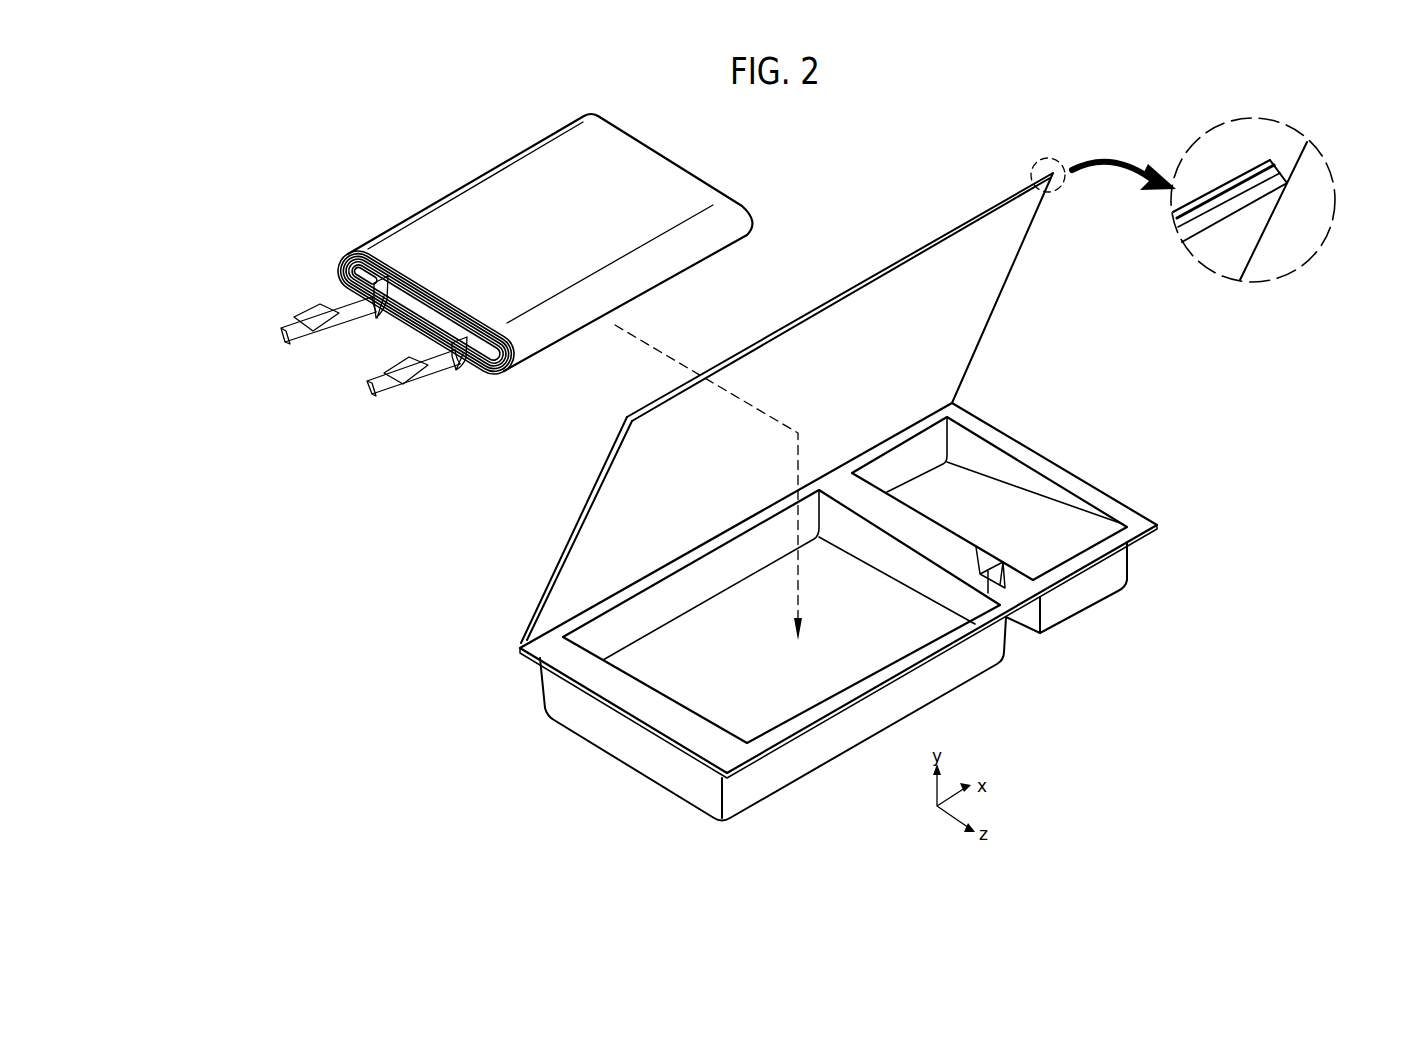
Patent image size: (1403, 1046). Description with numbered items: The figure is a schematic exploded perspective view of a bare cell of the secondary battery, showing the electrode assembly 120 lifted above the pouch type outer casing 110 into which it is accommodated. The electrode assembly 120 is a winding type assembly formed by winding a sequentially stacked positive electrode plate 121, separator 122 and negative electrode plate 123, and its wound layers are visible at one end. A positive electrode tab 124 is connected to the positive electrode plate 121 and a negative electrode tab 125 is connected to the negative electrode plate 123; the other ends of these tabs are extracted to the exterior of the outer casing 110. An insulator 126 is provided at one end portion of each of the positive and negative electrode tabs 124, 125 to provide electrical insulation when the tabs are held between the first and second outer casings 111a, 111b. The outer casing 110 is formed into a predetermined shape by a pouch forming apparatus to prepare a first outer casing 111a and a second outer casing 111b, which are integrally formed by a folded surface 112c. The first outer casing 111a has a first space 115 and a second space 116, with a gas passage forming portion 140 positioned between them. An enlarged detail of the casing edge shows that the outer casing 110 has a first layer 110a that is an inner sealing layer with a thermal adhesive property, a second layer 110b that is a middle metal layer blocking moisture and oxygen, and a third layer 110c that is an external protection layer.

The outer casing 110 is at (861, 606).
The first layer 110a is at (1307, 142).
The second layer 110b is at (1280, 168).
The third layer 110c is at (1272, 160).
The first outer casing 111a is at (1105, 500).
The second outer casing 111b is at (748, 392).
The folded surface 112c is at (574, 608).
The first space 115 is at (777, 695).
The second space 116 is at (1027, 542).
The electrode assembly 120 is at (475, 294).
The positive electrode plate 121 is at (346, 278).
The separator 122 is at (345, 264).
The negative electrode plate 123 is at (344, 254).
The positive electrode tab 124 is at (283, 335).
The negative electrode tab 125 is at (396, 388).
The insulator 126 is at (300, 318).
The gas passage forming portion 140 is at (1015, 595).